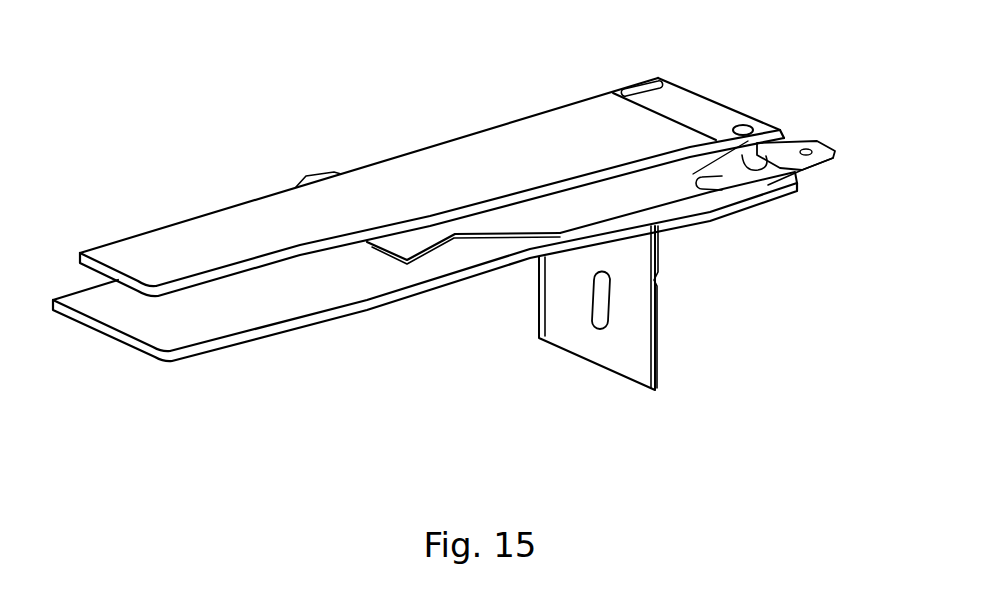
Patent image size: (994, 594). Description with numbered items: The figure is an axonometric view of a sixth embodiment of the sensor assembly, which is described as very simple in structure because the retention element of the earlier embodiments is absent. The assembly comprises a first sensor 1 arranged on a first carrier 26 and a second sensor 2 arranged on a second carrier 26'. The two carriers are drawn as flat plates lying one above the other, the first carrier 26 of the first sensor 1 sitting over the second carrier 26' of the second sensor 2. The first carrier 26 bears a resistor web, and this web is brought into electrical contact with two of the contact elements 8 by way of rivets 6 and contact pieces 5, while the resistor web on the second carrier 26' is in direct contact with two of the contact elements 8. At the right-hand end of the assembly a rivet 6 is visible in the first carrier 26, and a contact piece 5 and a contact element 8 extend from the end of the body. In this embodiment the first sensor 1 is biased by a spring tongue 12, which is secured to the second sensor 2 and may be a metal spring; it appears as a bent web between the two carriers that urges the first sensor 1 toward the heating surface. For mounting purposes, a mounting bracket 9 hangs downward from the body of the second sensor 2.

The first sensor 1 is at (448, 164).
The second sensor 2 is at (444, 284).
The contact piece 5 is at (737, 160).
The rivet 6 is at (748, 124).
The contact element 8 is at (812, 165).
The mounting bracket 9 is at (597, 338).
The spring tongue 12 is at (497, 230).
The first carrier 26 is at (432, 187).
The second carrier 26' is at (425, 304).